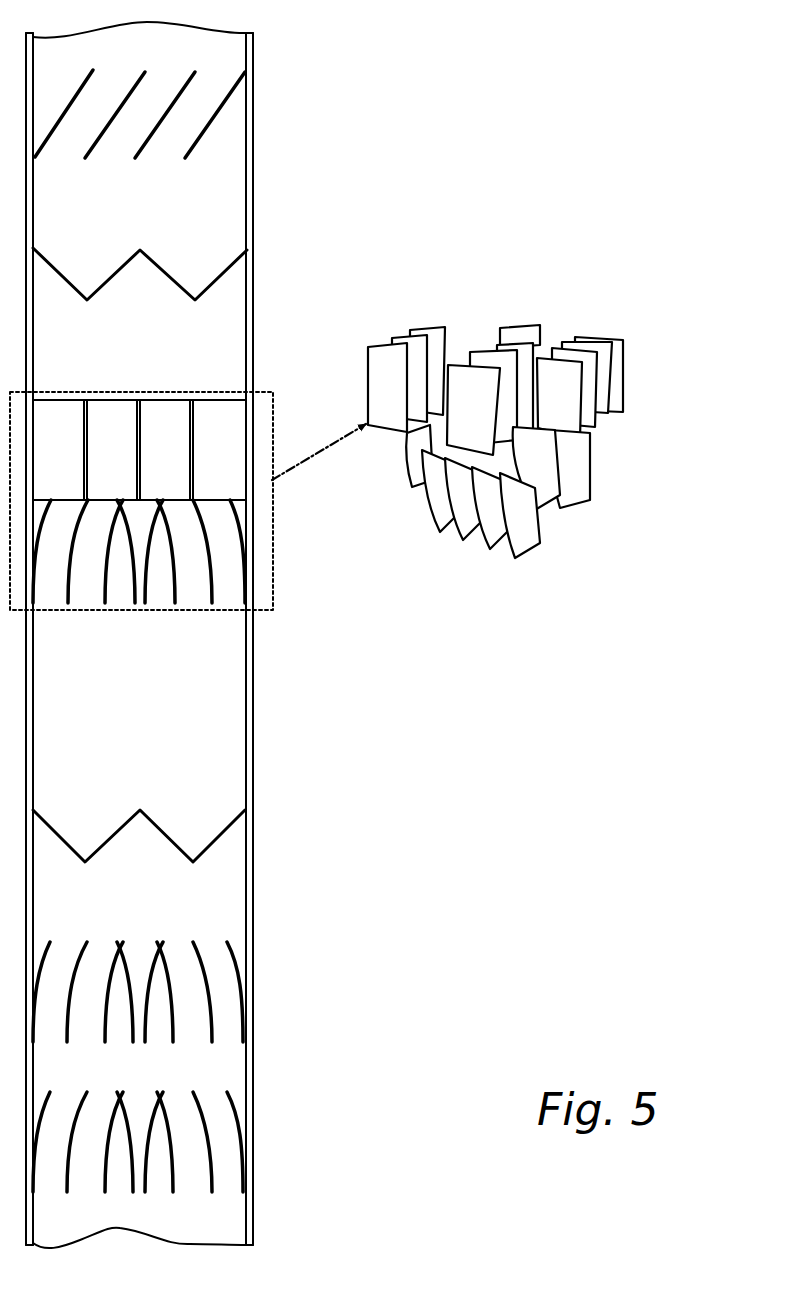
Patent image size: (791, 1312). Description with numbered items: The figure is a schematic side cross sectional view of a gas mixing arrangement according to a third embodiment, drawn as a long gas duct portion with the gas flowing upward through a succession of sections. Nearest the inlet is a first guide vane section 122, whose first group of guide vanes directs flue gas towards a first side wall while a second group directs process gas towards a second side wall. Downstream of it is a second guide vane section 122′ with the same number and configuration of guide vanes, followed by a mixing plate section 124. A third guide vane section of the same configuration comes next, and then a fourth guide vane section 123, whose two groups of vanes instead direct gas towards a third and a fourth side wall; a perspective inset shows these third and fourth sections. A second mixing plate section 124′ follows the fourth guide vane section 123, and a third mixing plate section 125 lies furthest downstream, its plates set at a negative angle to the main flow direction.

The first guide vane section 122 is at (200, 1076).
The second guide vane section 122′ is at (182, 920).
The fourth guide vane section 123 is at (188, 383).
The mixing plate section 124 is at (199, 818).
The second mixing plate section 124′ is at (187, 257).
The third mixing plate section 125 is at (226, 140).